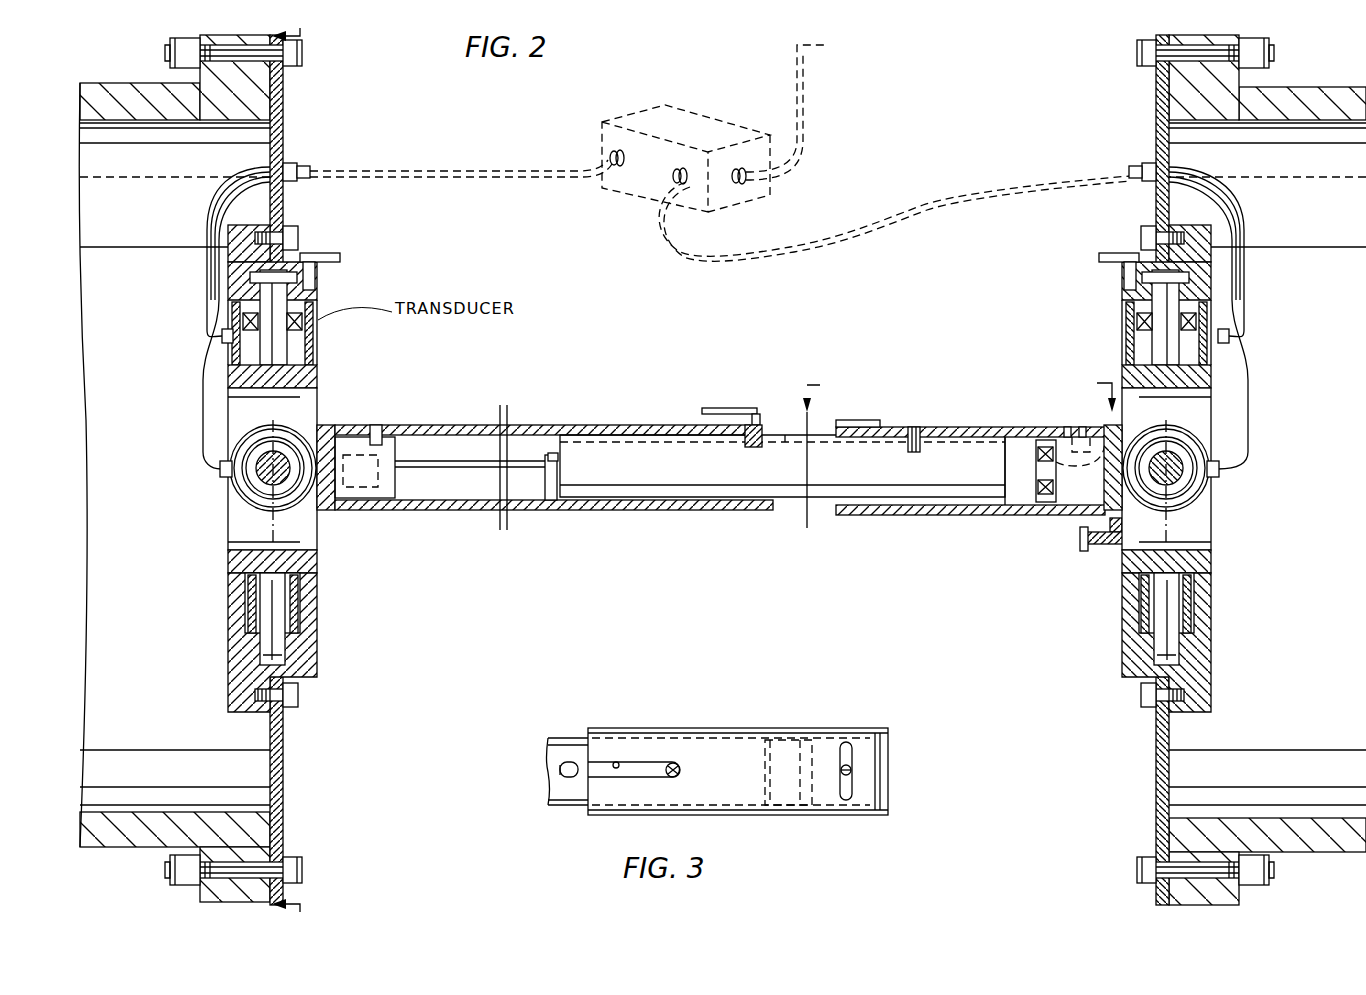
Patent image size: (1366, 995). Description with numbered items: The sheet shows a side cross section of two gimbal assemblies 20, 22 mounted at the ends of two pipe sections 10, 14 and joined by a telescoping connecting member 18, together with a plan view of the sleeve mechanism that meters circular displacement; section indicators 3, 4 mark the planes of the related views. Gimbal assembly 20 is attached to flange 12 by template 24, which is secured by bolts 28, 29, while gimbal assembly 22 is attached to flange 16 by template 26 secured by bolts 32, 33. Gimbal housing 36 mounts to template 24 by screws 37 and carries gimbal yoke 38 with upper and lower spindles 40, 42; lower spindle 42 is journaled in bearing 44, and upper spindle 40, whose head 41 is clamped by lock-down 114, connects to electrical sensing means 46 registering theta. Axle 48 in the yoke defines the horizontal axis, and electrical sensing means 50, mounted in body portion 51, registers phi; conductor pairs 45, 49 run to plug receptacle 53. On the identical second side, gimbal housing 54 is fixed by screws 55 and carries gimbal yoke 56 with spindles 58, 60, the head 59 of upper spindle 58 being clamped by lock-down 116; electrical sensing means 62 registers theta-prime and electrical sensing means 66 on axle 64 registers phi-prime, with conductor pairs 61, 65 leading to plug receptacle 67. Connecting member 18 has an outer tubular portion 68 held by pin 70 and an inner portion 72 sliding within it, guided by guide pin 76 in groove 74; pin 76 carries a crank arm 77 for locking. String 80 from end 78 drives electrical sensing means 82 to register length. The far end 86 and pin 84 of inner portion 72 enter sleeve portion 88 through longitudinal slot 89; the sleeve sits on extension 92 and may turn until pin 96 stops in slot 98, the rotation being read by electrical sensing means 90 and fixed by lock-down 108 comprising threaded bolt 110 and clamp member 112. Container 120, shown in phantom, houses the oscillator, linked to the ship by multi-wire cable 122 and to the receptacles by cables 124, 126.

In FIG. 2, the section line 3- 3 is at (955, 441).
In FIG. 2, the section line 4- 4 is at (294, 469).
In FIG. 2, the first pipe section 10 is at (120, 83).
In FIG. 2, the flange 12 is at (255, 102).
In FIG. 2, the second pipe section 14 is at (1333, 87).
In FIG. 2, the flange 16 is at (1178, 100).
In FIG. 2, the connecting member 18 is at (721, 471).
In FIG. 2, the gimbal assembly 20 is at (289, 458).
In FIG. 2, the gimbal assembly 22 is at (1141, 451).
In FIG. 2, the template 24 is at (283, 145).
In FIG. 2, the template 26 is at (1158, 140).
In FIG. 2, the bolt 28 is at (302, 58).
In FIG. 2, the bolt 29 is at (300, 866).
In FIG. 2, the bolt 32 is at (1133, 56).
In FIG. 2, the bolt 33 is at (1131, 876).
In FIG. 2, the gimbal housing 36 is at (232, 280).
In FIG. 2, the screw 37 is at (292, 242).
In FIG. 2, the gimbal yoke 38 is at (320, 382).
In FIG. 2, the upper spindle 40 is at (288, 300).
In FIG. 2, the head 41 is at (245, 245).
In FIG. 2, the lower spindle 42 is at (302, 642).
In FIG. 2, the bearing 44 is at (300, 596).
In FIG. 2, the conductor pair 45 is at (214, 313).
In FIG. 2, the electrical sensing means 46 is at (312, 342).
In FIG. 2, the axle 48 is at (262, 482).
In FIG. 2, the conductor pair 49 is at (204, 408).
In FIG. 2, the electrical sensing means 50 is at (224, 461).
In FIG. 2, the body portion 51 is at (303, 505).
In FIG. 2, the plug receptacle 53 is at (300, 180).
In FIG. 2, the gimbal housing 54 is at (1212, 248).
In FIG. 2, the screw 55 is at (1148, 240).
In FIG. 2, the gimbal yoke 56 is at (1214, 380).
In FIG. 2, the upper spindle 58 is at (1182, 300).
In FIG. 2, the head 59 is at (1232, 268).
In FIG. 2, the lower spindle 60 is at (1187, 612).
In FIG. 2, the conductor pair 61 is at (1224, 292).
In FIG. 2, the electrical sensing means 62 is at (1202, 325).
In FIG. 2, the axle 64 is at (1208, 498).
In FIG. 2, the conductor pair 65 is at (1250, 420).
In FIG. 2, the electrical sensing means 66 is at (1233, 470).
In FIG. 2, the plug receptacle 67 is at (1135, 178).
In FIG. 2, the outer tubular portion 68 is at (605, 425).
In FIG. 2, the pin 70 is at (378, 425).
In FIG. 2, the inner portion 72 is at (684, 498).
In FIG. 3, the inner portion 72 is at (566, 738).
In FIG. 2, the groove 74 is at (791, 434).
In FIG. 2, the guide pin 76 is at (758, 423).
In FIG. 2, the crank arm 77 is at (716, 408).
In FIG. 2, the end 78 is at (551, 500).
In FIG. 2, the string 80 is at (448, 460).
In FIG. 2, the electrical sensing means 82 is at (378, 490).
In FIG. 2, the pin 84 is at (915, 427).
In FIG. 3, the pin 84 is at (673, 762).
In FIG. 2, the end 86 is at (1040, 485).
In FIG. 3, the sleeve portion 88 is at (720, 728).
In FIG. 2, the longitudinal slot 89 is at (860, 422).
In FIG. 3, the longitudinal slot 89 is at (617, 762).
In FIG. 2, the electrical sensing means 90 is at (1048, 494).
In FIG. 3, the electrical sensing means 90 is at (808, 752).
In FIG. 2, the extension 92 is at (1062, 430).
In FIG. 2, the pin 96 is at (1078, 428).
In FIG. 3, the pin 96 is at (852, 765).
In FIG. 2, the slot 98 is at (1086, 436).
In FIG. 3, the slot 98 is at (846, 742).
In FIG. 2, the lock-down 108 is at (1082, 552).
In FIG. 2, the threaded bolt 110 is at (1098, 546).
In FIG. 2, the clamp member 112 is at (1108, 524).
In FIG. 2, the lock-down 114 is at (336, 256).
In FIG. 2, the lock-down 116 is at (1110, 257).
In FIG. 2, the container 120 is at (645, 112).
In FIG. 2, the multi-wire cable 122 is at (806, 100).
In FIG. 2, the cable 124 is at (494, 170).
In FIG. 2, the cable 126 is at (898, 222).